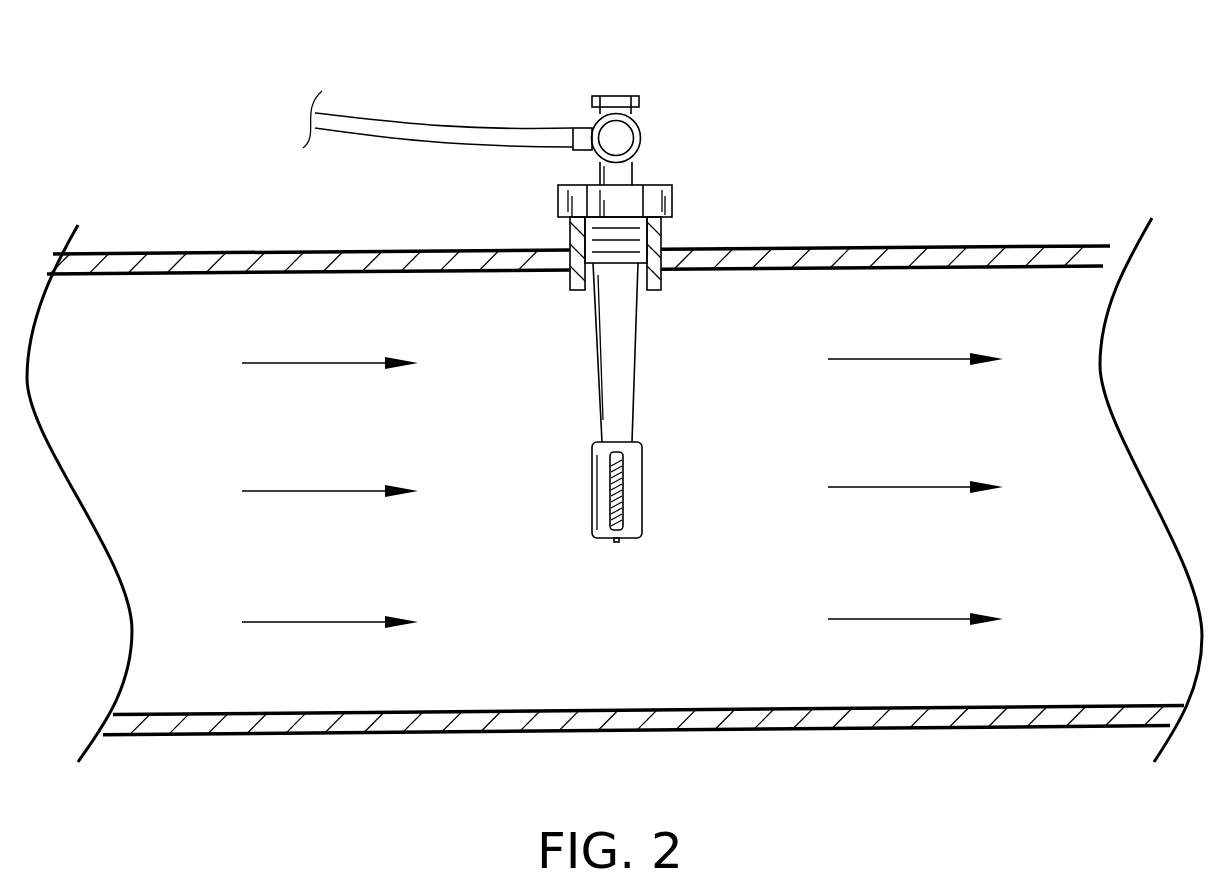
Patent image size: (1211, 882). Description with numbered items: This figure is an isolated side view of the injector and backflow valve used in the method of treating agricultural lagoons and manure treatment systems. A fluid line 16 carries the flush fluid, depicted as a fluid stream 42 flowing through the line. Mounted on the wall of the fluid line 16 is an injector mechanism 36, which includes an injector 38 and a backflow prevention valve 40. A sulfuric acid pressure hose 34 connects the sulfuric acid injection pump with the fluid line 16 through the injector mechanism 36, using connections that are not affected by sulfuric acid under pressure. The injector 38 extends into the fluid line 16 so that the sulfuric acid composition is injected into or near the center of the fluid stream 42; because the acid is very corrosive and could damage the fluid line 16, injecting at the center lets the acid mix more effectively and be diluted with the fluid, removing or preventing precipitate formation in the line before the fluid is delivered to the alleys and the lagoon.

The fluid line 16 is at (921, 246).
The sulfuric acid pressure hose 34 is at (405, 120).
The injector mechanism 36 is at (676, 181).
The injector 38 is at (593, 490).
The backflow prevention valve 40 is at (596, 96).
The fluid stream 42 is at (315, 622).